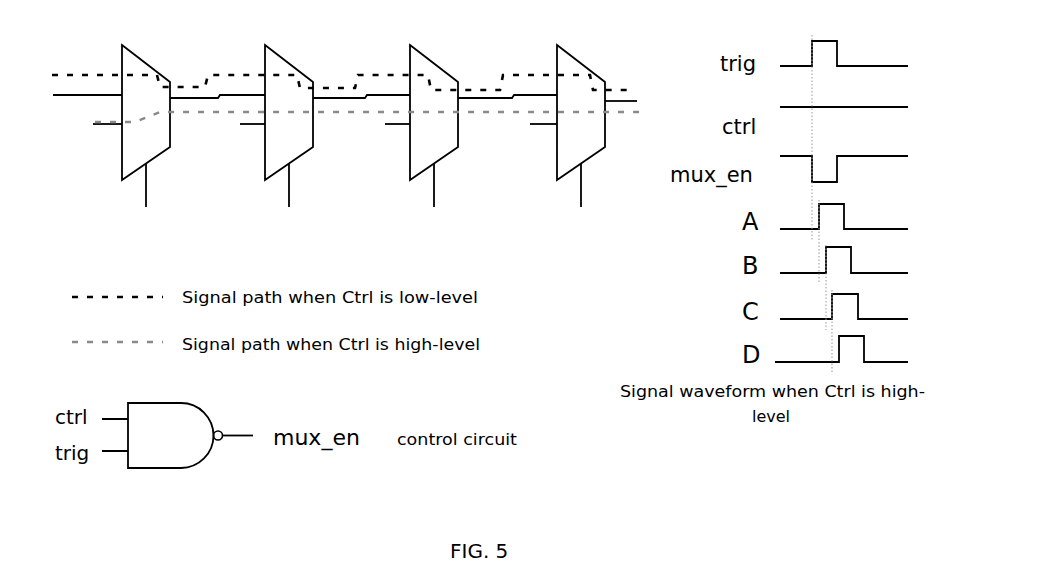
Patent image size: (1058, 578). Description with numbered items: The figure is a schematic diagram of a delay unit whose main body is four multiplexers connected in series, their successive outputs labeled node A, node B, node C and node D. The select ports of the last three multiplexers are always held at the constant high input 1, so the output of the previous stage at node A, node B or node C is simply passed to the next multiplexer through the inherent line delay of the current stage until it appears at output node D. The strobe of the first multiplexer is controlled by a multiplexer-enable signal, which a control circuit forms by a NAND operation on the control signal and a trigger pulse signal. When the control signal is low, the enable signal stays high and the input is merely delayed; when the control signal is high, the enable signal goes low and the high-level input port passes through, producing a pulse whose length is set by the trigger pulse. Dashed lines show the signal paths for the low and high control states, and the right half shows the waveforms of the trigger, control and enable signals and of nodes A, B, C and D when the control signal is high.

The output node A of first multiplexer A is at (159, 144).
The output node B of second multiplexer B is at (325, 126).
The output node C of third multiplexer C is at (471, 126).
The output node D of fourth multiplexer D is at (583, 126).
The constant high input 1 is at (328, 181).